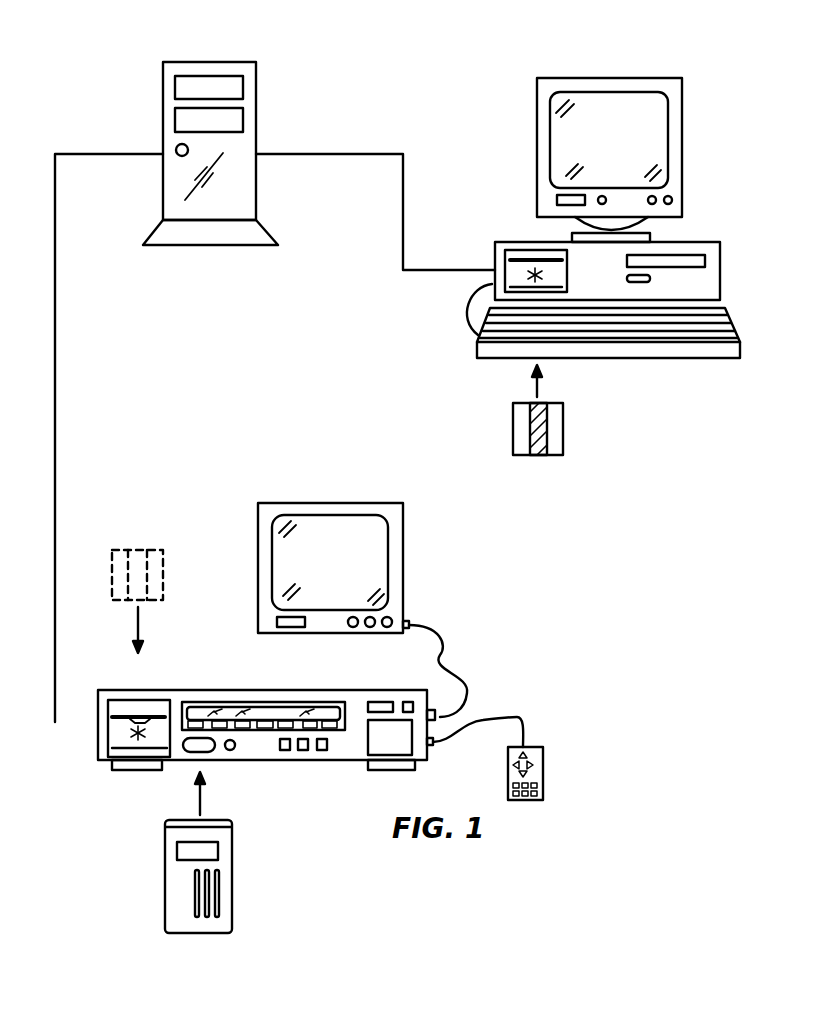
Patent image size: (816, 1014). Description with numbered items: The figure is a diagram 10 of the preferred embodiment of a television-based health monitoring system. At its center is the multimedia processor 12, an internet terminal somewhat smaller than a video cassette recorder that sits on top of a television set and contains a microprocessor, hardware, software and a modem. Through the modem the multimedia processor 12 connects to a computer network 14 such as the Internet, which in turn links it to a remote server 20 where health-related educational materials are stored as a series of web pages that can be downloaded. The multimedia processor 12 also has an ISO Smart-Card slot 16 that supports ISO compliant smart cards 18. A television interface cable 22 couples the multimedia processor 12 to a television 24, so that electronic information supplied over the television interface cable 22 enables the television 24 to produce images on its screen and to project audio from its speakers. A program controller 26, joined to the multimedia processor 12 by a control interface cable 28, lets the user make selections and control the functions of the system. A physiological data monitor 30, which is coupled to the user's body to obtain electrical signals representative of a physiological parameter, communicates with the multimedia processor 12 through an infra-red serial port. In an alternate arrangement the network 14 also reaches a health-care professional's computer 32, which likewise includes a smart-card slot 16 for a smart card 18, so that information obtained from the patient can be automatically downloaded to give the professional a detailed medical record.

The diagram 10 is at (110, 85).
The multimedia processor 12 is at (237, 690).
The computer network 14 is at (56, 437).
The ISO Smart-Card slot 16 is at (527, 257).
The ISO compliant smart card 18 is at (512, 432).
The remote server 20 is at (257, 117).
The television interface cable 22 is at (452, 675).
The television 24 is at (405, 558).
The program controller 26 is at (543, 765).
The control interface cable 28 is at (517, 717).
The physiological data monitor 30 is at (232, 835).
The health-care professional's computer 32 is at (410, 417).